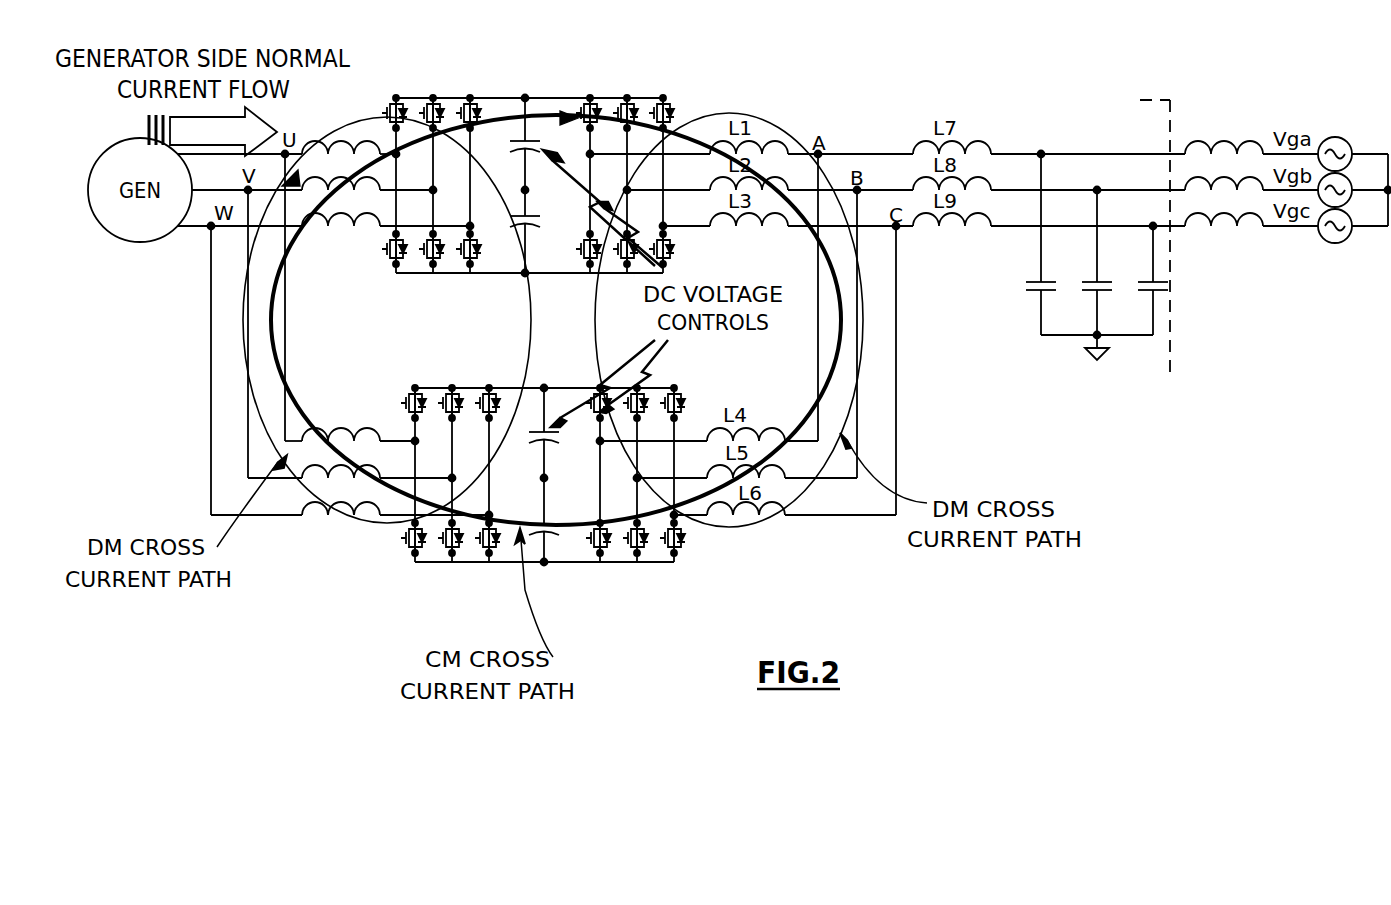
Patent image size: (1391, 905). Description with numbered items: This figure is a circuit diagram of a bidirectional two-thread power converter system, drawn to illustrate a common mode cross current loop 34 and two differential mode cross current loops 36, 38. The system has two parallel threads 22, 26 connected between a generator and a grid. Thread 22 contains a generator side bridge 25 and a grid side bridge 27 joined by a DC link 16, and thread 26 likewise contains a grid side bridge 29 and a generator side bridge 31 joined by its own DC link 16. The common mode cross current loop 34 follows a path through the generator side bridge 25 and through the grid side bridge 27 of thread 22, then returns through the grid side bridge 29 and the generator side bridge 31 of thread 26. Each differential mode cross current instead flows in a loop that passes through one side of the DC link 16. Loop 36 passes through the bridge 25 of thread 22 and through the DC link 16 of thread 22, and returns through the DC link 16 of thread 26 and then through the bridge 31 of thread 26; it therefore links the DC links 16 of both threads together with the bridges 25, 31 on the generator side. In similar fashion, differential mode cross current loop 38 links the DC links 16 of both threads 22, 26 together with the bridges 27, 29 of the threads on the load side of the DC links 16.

The DC link 16 is at (537, 245).
The thread 22 is at (332, 252).
The generator side bridge (converter) 25 is at (414, 82).
The thread 26 is at (349, 390).
The grid side bridge (converter) 27 is at (652, 86).
The grid side bridge (converter) 29 is at (620, 585).
The generator side bridge (converter) 31 is at (420, 588).
The common mode cross current loop 34 is at (566, 532).
The differential mode cross current loop 36 is at (265, 427).
The differential mode cross current loop 38 is at (843, 420).